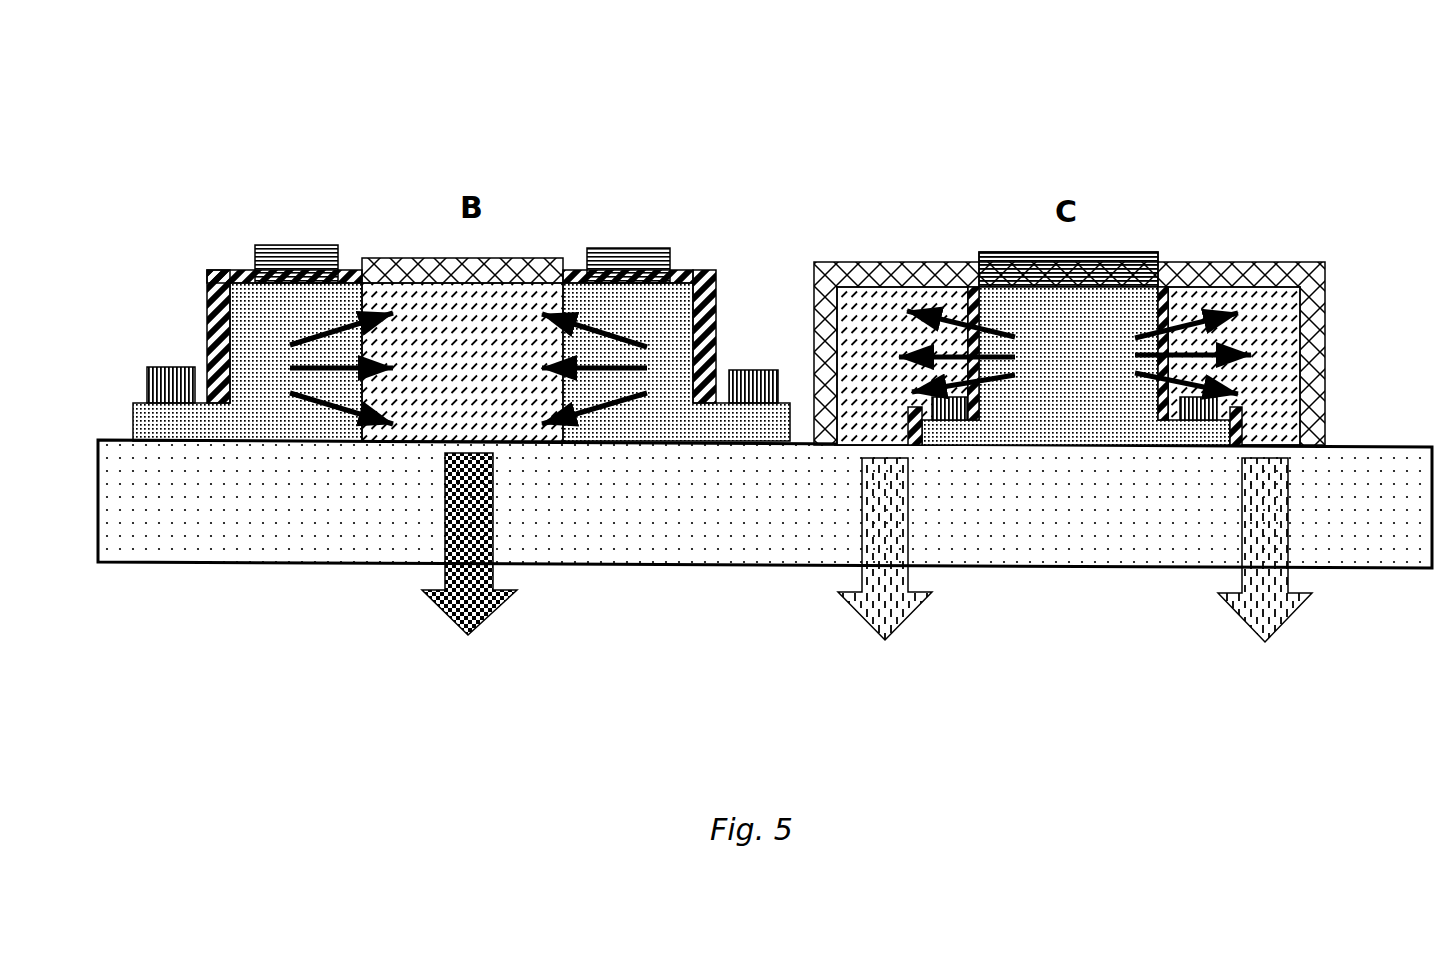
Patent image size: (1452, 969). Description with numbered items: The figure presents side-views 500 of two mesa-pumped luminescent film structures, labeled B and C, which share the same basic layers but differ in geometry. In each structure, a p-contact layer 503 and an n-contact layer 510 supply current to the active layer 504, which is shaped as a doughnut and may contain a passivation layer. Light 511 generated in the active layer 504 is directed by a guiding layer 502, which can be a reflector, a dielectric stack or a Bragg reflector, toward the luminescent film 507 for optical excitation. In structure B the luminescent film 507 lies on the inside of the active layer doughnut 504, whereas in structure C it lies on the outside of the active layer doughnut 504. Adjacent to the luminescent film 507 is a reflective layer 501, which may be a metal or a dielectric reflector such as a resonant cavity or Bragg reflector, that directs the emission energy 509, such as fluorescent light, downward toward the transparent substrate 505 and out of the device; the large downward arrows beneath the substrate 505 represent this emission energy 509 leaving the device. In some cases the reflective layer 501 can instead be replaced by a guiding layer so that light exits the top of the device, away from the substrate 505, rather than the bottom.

The side-views 500 is at (213, 675).
The reflective layer 501 is at (717, 322).
The guiding layer 502 is at (204, 354).
The p-contact layer 503 is at (296, 242).
The active layer 504 is at (1079, 325).
The substrate 505 is at (1056, 536).
The luminescent film 507 is at (481, 322).
The emission energy 509 is at (1260, 647).
The n-contact layer 510 is at (171, 362).
The light 511 is at (1004, 402).